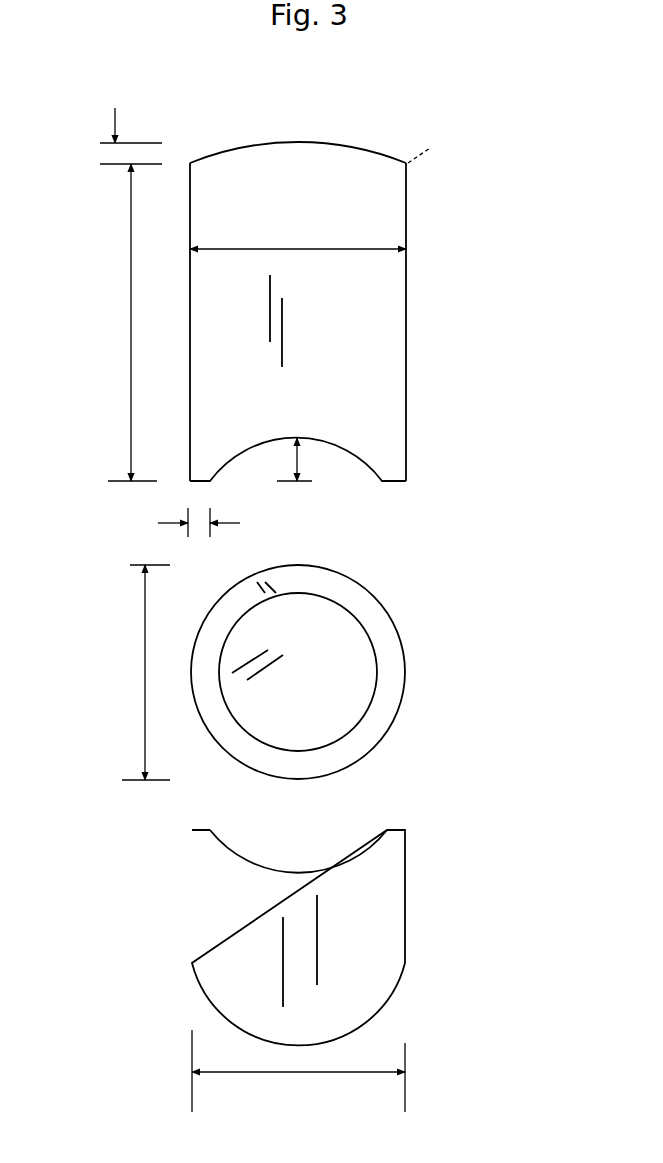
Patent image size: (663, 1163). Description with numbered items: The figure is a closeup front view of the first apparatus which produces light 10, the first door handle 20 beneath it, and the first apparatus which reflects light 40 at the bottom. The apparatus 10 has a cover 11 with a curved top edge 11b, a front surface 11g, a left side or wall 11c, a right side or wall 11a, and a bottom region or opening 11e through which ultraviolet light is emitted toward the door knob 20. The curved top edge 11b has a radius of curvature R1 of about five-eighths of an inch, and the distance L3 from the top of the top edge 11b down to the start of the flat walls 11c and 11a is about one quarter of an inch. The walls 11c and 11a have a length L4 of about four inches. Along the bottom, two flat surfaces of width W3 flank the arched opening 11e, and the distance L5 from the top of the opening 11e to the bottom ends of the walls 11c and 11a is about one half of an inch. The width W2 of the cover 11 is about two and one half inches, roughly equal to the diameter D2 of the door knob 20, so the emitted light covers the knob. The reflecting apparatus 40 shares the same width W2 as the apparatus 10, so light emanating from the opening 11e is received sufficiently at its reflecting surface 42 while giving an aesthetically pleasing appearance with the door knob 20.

The first apparatus which produces light 10 is at (388, 354).
The cover 11 is at (390, 430).
The right side or wall 11a is at (406, 363).
The top edge 11b is at (340, 145).
The left side or wall 11c is at (190, 305).
The bottom region or opening 11e is at (335, 448).
The front surface 11g is at (370, 300).
The first door handle 20 is at (375, 612).
The first apparatus which reflects light 40 is at (220, 922).
The reflecting surface 42 is at (315, 870).
The distance from top of top edge to start of flat sides L3 is at (108, 155).
The length of sides or walls L4 is at (128, 322).
The distance between top of bottom opening and bottom end of walls L5 is at (287, 459).
The width of cover W2 is at (298, 669).
The width of flat surfaces W3 is at (198, 532).
The diameter of door knob D2 is at (147, 672).
The radius of curvature of top edge R1 is at (455, 171).